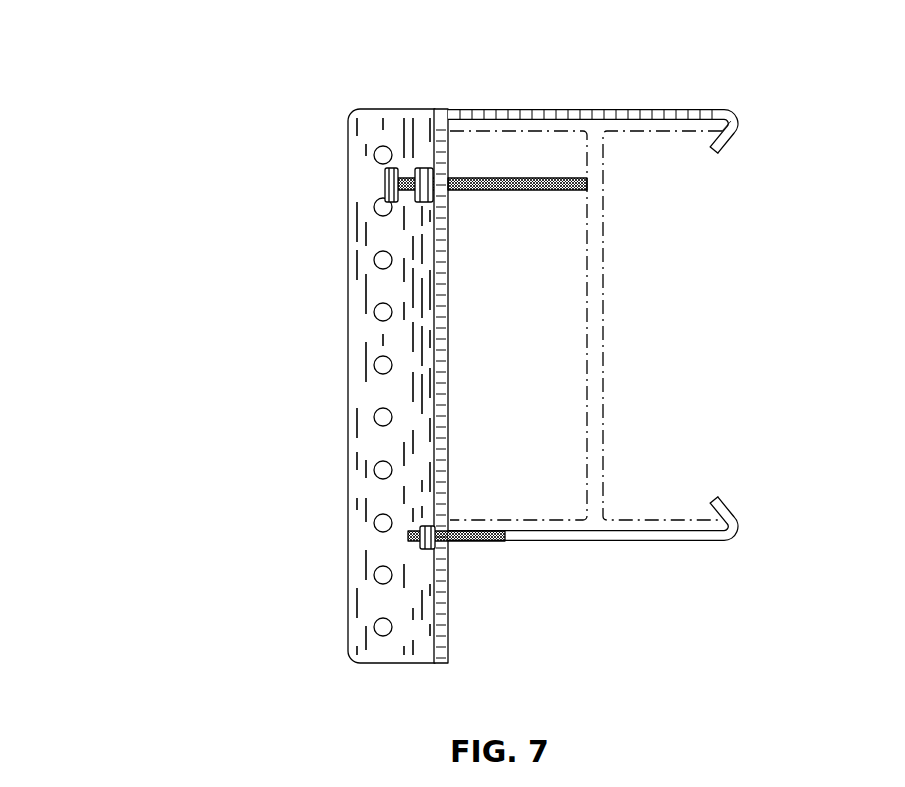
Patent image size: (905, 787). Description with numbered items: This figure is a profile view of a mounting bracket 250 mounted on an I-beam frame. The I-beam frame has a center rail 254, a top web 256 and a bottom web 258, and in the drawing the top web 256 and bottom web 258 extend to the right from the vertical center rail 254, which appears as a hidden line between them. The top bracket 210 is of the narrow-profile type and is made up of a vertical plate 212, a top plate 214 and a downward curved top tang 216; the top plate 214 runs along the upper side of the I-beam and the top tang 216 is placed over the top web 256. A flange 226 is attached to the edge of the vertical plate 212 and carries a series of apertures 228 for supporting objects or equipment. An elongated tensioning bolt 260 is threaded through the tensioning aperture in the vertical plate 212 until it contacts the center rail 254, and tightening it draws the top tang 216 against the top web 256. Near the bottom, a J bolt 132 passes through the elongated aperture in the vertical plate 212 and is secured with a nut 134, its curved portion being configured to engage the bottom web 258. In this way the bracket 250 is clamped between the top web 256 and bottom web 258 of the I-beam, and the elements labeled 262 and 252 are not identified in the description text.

The mounting bracket 250 is at (160, 54).
The flange 226 is at (360, 92).
The apertures 228 is at (375, 311).
The bolt 262 is at (420, 172).
The top bracket 210 is at (522, 92).
The vertical plate 212 is at (448, 410).
The top plate 214 is at (590, 108).
The top tang 216 is at (740, 108).
The top web 256 is at (675, 135).
The elongated tensioning bolt 260 is at (478, 190).
The center rail 254 is at (603, 305).
The hidden member 252 is at (625, 398).
The bottom web 258 is at (680, 500).
The J bolt 132 is at (660, 543).
The nut 134 is at (430, 550).